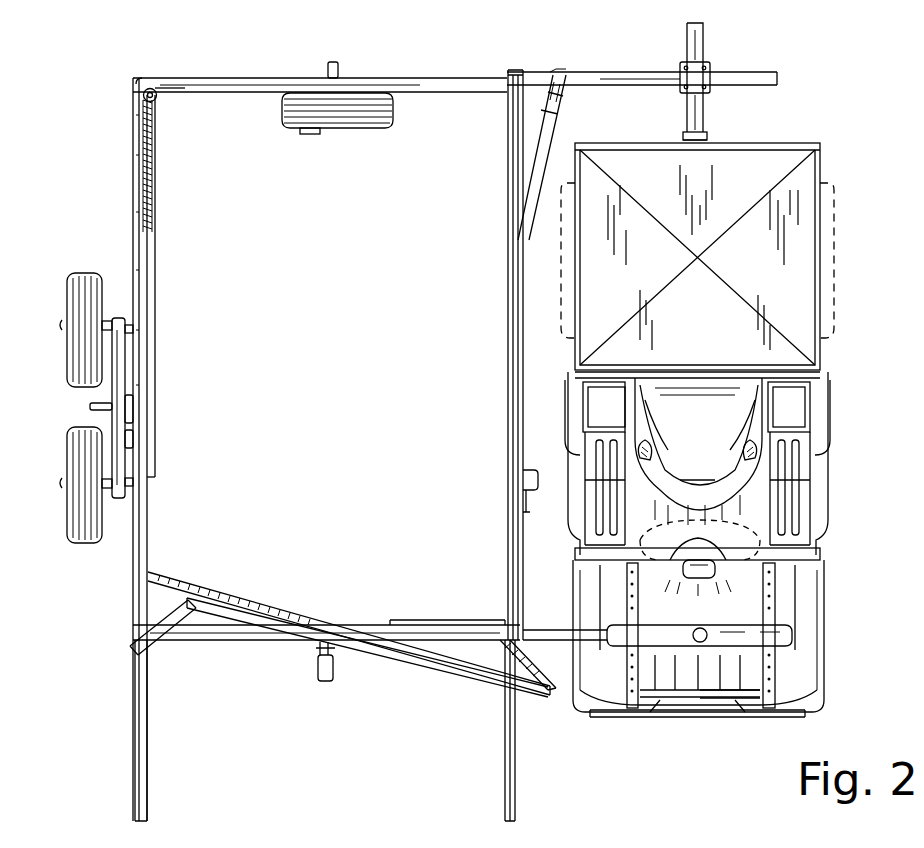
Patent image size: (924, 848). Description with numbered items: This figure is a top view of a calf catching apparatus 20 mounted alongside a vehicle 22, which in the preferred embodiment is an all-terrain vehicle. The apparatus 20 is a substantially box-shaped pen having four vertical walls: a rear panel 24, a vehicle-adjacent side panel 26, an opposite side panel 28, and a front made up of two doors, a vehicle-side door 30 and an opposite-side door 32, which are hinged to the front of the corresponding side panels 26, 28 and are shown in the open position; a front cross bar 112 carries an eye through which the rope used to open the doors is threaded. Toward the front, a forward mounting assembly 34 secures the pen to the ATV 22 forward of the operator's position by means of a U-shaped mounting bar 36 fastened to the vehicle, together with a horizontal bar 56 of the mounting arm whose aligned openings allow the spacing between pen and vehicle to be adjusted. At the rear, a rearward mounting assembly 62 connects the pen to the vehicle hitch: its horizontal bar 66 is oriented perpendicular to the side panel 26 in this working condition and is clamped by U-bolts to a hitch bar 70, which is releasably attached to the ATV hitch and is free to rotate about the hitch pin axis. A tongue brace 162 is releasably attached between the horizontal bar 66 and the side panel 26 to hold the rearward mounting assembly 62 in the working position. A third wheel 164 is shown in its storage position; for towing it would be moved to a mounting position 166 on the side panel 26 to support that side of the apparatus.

The calf catching apparatus 20 is at (68, 608).
The vehicle 22 is at (830, 414).
The rear panel 24 is at (218, 86).
The vehicle-adjacent side panel 26 is at (508, 133).
The opposite side panel 28 is at (133, 166).
The vehicle-side door 30 is at (505, 762).
The opposite-side door 32 is at (133, 765).
The forward mounting assembly 34 is at (780, 627).
The U-shaped mounting bar 36 is at (733, 635).
The horizontal bar 56 is at (555, 700).
The rearward mounting assembly 62 is at (758, 112).
The horizontal bar 66 is at (640, 35).
The hitch bar 70 is at (703, 38).
The front cross bar 112 is at (365, 624).
The tongue brace 162 is at (546, 132).
The third wheel 164 is at (320, 134).
The mounting position 166 is at (525, 478).